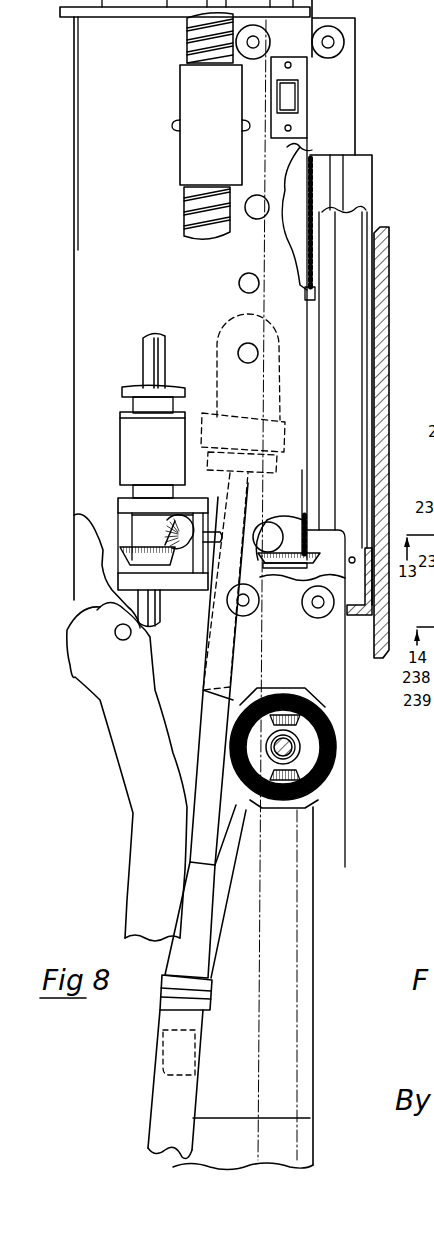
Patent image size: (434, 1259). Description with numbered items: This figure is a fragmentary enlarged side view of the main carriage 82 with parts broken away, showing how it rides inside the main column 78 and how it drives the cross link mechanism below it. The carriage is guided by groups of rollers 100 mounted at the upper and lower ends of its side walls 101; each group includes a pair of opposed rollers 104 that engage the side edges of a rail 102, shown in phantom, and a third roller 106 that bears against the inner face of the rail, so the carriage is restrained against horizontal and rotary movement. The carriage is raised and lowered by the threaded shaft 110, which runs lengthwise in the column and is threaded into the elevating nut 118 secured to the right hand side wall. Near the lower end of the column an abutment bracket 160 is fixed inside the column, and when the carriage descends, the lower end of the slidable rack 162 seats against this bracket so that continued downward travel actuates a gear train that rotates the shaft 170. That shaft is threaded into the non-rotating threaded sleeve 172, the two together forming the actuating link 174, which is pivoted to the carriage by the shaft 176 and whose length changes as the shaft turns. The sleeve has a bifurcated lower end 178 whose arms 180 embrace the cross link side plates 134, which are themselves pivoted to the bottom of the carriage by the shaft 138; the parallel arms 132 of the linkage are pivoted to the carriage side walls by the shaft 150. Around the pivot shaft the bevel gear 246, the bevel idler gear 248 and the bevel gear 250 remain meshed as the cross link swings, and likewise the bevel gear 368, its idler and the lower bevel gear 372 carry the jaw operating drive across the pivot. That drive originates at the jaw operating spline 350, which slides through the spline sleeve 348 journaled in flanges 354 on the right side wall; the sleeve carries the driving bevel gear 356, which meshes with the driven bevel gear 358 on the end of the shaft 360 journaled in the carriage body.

The main carriage 82 is at (96, 225).
The side walls 101 is at (85, 128).
The threaded shaft 110 is at (190, 43).
The elevating nut 118 is at (222, 106).
The opposed rollers 104 is at (263, 43).
The third roller 106 is at (293, 97).
The rack 162 is at (320, 170).
The main column 78 is at (391, 470).
The shaft 176 is at (240, 350).
The shaft 170 is at (213, 654).
The jaw operating spline 350 is at (155, 356).
The spline sleeve 348 is at (162, 458).
The flanges 354 is at (128, 505).
The driving bevel gear 356 is at (133, 562).
The shaft 360 is at (213, 510).
The driven bevel gear 358 is at (197, 572).
The shaft 150 is at (115, 632).
The parallel arms 132 is at (120, 740).
The actuating link 174 is at (192, 745).
The threaded sleeve 172 is at (181, 955).
The side plates 134 is at (308, 836).
The arms 180 is at (162, 1100).
The bifurcated lower end 178 is at (156, 1045).
The rails 102 is at (287, 865).
The groups of rollers 100 is at (299, 32).
The abutment bracket 160 is at (365, 607).
The bevel gear 246 is at (320, 692).
The bevel gear 250 is at (322, 796).
The bevel gear 368 is at (322, 717).
The bevel idler gear 248 is at (340, 740).
The shaft 138 is at (300, 749).
The lower bevel gear 372 is at (322, 779).